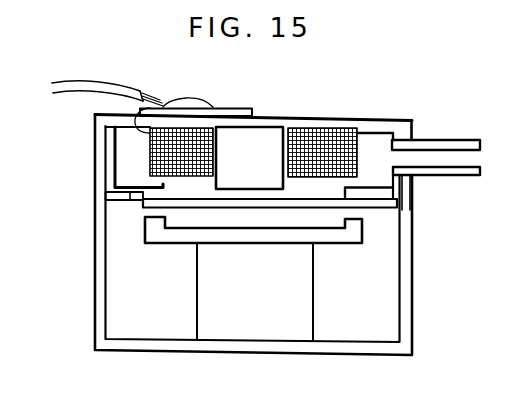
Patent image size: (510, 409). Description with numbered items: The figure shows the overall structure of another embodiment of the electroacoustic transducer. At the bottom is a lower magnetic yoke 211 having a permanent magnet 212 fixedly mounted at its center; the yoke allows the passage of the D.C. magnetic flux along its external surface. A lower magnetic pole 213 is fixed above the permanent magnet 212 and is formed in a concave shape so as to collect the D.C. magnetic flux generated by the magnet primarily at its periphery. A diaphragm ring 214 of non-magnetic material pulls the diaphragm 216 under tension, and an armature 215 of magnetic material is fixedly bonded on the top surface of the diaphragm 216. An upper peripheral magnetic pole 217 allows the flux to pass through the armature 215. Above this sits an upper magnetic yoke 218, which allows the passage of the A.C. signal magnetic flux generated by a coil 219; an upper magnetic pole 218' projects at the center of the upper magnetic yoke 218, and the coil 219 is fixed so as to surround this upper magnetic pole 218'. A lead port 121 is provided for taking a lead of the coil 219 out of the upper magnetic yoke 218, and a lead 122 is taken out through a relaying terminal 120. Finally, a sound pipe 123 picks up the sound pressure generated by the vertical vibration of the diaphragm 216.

The relaying terminal 120 is at (233, 108).
The lead port 121 is at (138, 130).
The lead 122 is at (118, 86).
The sound pipe 123 is at (462, 140).
The lower magnetic yoke 211 is at (132, 351).
The permanent magnet 212 is at (237, 327).
The lower magnetic pole 213 is at (157, 231).
The diaphragm ring 214 is at (108, 197).
The armature 215 is at (353, 208).
The diaphragm 216 is at (396, 199).
The upper peripheral magnetic pole 217 is at (114, 144).
The upper magnetic yoke 218 is at (393, 110).
The upper magnetic pole 218' is at (264, 134).
The coil 219 is at (325, 143).